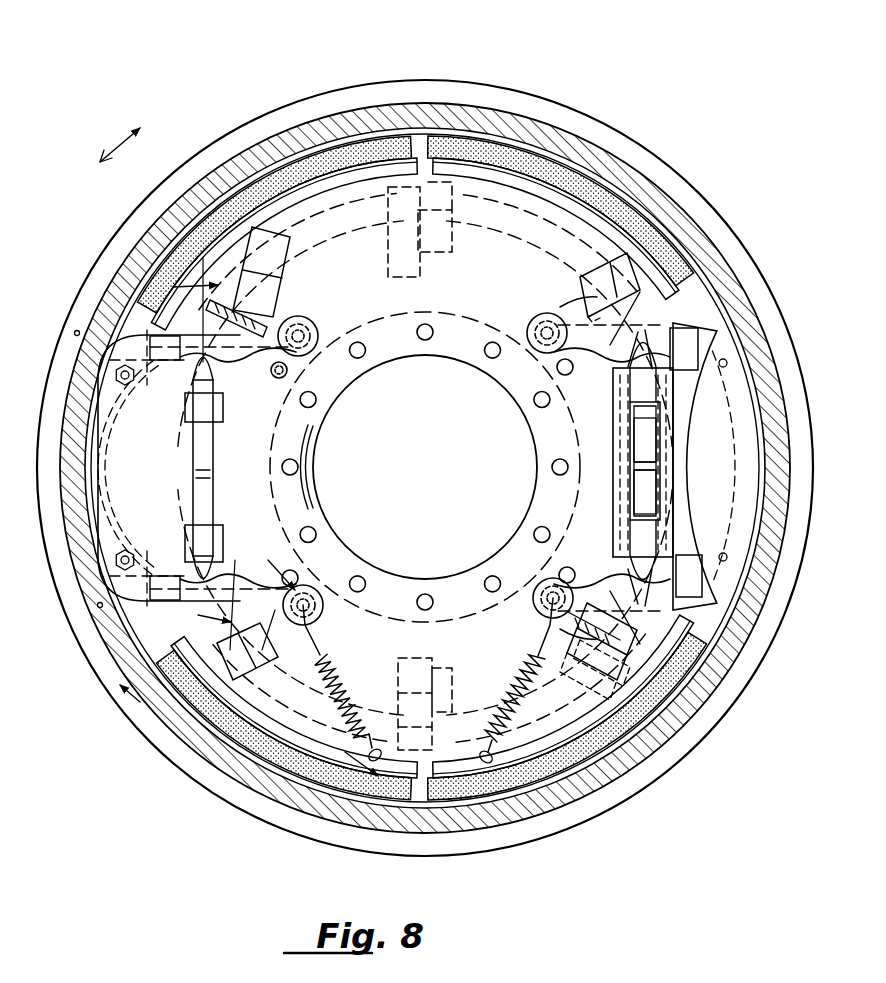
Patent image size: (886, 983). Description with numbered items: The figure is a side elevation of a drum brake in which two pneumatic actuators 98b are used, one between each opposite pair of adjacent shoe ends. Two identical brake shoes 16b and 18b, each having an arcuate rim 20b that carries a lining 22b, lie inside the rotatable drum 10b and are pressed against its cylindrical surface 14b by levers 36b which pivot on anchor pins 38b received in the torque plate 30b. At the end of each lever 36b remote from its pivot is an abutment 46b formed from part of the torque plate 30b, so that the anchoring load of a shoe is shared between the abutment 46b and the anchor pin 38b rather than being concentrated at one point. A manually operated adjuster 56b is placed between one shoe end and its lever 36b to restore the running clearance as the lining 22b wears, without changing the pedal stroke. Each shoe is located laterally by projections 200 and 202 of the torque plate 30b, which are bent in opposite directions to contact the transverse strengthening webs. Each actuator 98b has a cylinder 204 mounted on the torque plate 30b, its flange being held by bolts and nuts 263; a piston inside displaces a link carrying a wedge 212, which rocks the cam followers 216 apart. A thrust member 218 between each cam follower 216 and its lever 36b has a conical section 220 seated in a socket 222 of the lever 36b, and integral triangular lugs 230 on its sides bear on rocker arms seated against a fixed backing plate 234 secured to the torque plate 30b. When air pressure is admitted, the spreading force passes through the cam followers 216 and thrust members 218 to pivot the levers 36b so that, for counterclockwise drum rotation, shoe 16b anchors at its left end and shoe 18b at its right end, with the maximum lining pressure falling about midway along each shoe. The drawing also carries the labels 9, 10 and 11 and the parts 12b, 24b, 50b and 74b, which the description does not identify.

The rotatable drum 10b is at (636, 133).
The projection of the torque plate 200 is at (347, 123).
The projection of the torque plate 202 is at (425, 110).
The drum wall 12b is at (477, 817).
The cylindrical surface 14b is at (646, 222).
The nuts 263 is at (77, 333).
The brake lining 24b is at (458, 143).
The lining 22b is at (240, 200).
The arcuate rim 20b is at (478, 167).
The brake shoe 18b is at (592, 783).
The manually operated adjuster 56b is at (210, 197).
The brake shoe 16b is at (528, 200).
The torque plate 30b is at (405, 585).
The cylinder 204 is at (313, 437).
The pneumatic actuator 98b is at (316, 476).
The lever 36b is at (318, 365).
The anchor pin 38b is at (304, 342).
The conical section 220 is at (676, 333).
The socket 222 is at (650, 297).
The abutment 46b is at (696, 330).
The fixed backing plate 234 is at (663, 403).
The wedge 212 is at (638, 462).
The cam follower 216 is at (645, 432).
The thrust member 218 is at (647, 570).
The triangular lug 230 is at (223, 540).
The adjuster block 50b is at (588, 275).
The return spring 74b is at (357, 665).
The section line 9 is at (205, 453).
The section line 10 is at (310, 655).
The section line 11 is at (190, 644).